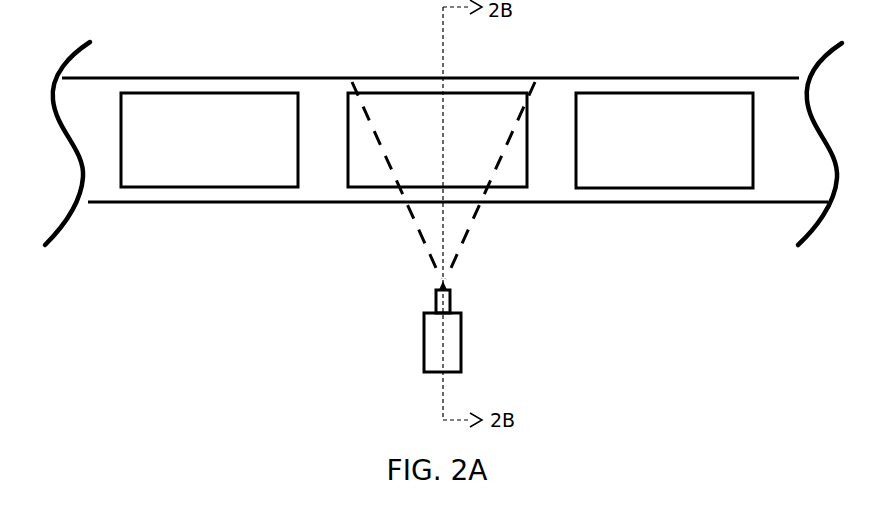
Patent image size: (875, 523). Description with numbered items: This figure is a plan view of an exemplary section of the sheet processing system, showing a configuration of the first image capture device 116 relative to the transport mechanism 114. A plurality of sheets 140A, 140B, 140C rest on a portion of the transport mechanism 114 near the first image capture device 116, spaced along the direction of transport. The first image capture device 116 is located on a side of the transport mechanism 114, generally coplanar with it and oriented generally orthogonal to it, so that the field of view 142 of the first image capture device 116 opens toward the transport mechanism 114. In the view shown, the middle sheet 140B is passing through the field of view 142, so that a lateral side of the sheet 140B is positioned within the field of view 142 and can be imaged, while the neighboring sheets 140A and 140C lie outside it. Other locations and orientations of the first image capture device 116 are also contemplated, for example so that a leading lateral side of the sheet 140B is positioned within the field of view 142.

The transport mechanism 114 is at (100, 155).
The first image capture device 116 is at (423, 343).
The sheet 140A is at (178, 122).
The sheet 140B is at (380, 108).
The sheet 140C is at (630, 117).
The field of view 142 is at (468, 235).